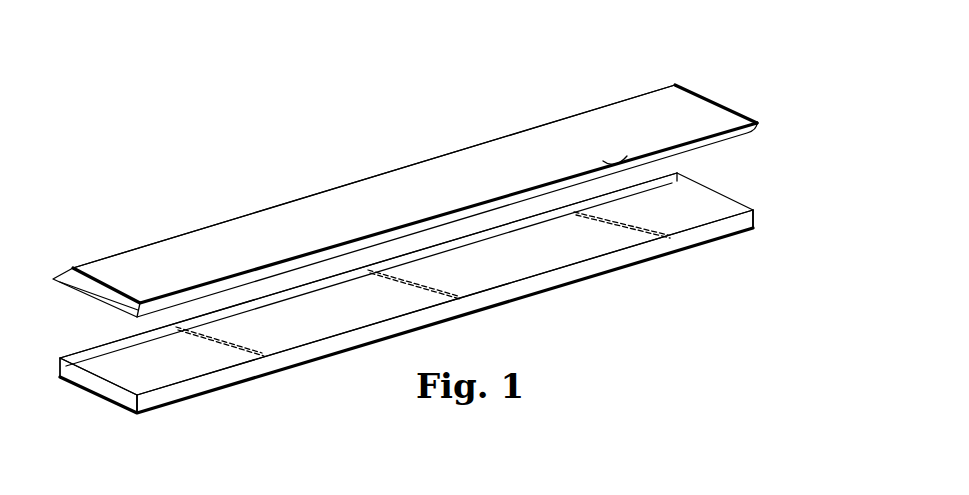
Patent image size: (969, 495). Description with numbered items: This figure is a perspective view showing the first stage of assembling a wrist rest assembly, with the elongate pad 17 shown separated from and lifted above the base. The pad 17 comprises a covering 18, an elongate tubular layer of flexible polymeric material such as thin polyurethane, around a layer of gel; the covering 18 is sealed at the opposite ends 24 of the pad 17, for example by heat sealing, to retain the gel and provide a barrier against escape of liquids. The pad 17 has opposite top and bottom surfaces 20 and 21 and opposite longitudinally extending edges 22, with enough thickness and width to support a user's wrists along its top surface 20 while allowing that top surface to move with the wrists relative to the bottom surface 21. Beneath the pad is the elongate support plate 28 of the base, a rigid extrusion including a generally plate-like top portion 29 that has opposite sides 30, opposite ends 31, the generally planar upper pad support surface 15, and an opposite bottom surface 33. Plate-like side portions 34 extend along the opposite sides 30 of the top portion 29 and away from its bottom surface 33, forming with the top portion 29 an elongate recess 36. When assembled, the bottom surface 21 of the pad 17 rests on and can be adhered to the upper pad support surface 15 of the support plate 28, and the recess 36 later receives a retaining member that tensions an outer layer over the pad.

The upper pad support surface 15 is at (399, 316).
The elongate pad 17 is at (478, 157).
The covering 18 is at (130, 263).
The top surface 20 is at (407, 192).
The bottom surface 21 is at (707, 145).
The longitudinally extending edges 22 is at (291, 203).
The ends 24 is at (701, 98).
The support plate 28 is at (337, 357).
The top portion 29 is at (103, 402).
The sides 30 is at (78, 354).
The ends 31 is at (100, 393).
The bottom surface 33 is at (87, 381).
The side portions 34 is at (60, 373).
The elongate recess 36 is at (123, 407).